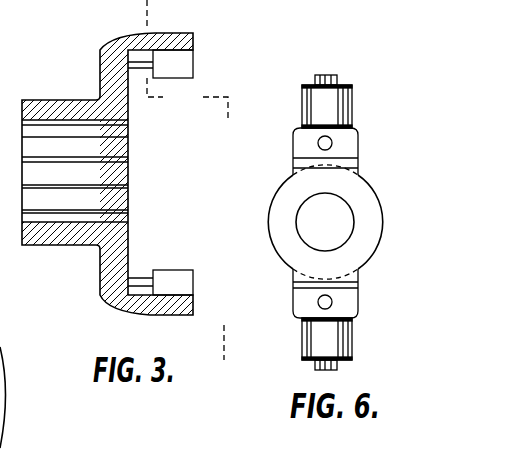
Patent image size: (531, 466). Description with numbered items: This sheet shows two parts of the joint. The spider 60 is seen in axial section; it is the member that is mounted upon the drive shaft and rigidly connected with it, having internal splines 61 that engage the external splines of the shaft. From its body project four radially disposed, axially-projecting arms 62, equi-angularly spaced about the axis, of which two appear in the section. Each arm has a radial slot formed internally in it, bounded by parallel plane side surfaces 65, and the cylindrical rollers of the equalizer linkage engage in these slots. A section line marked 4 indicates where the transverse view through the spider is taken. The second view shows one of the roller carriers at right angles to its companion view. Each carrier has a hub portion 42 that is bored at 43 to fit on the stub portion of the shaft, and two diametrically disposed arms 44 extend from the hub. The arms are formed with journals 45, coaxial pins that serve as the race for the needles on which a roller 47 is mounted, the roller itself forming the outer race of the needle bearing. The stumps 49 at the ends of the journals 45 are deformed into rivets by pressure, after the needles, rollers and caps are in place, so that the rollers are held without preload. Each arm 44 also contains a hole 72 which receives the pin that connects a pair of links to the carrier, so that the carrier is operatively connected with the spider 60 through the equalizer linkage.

In FIG. 3, the section line 4- 4 is at (147, 13).
In FIG. 3, the roller 47 is at (0, 28).
In FIG. 3, the spider 60 is at (92, 108).
In FIG. 3, the internal splines 61 is at (124, 172).
In FIG. 3, the arms 62 is at (175, 43).
In FIG. 3, the side surfaces 65 is at (182, 68).
In FIG. 6, the hub portion 42 is at (365, 220).
In FIG. 6, the bore 43 is at (312, 229).
In FIG. 6, the arms 44 is at (345, 151).
In FIG. 6, the journals 45 is at (338, 110).
In FIG. 6, the stumps 49 is at (335, 77).
In FIG. 6, the hole 72 is at (318, 143).